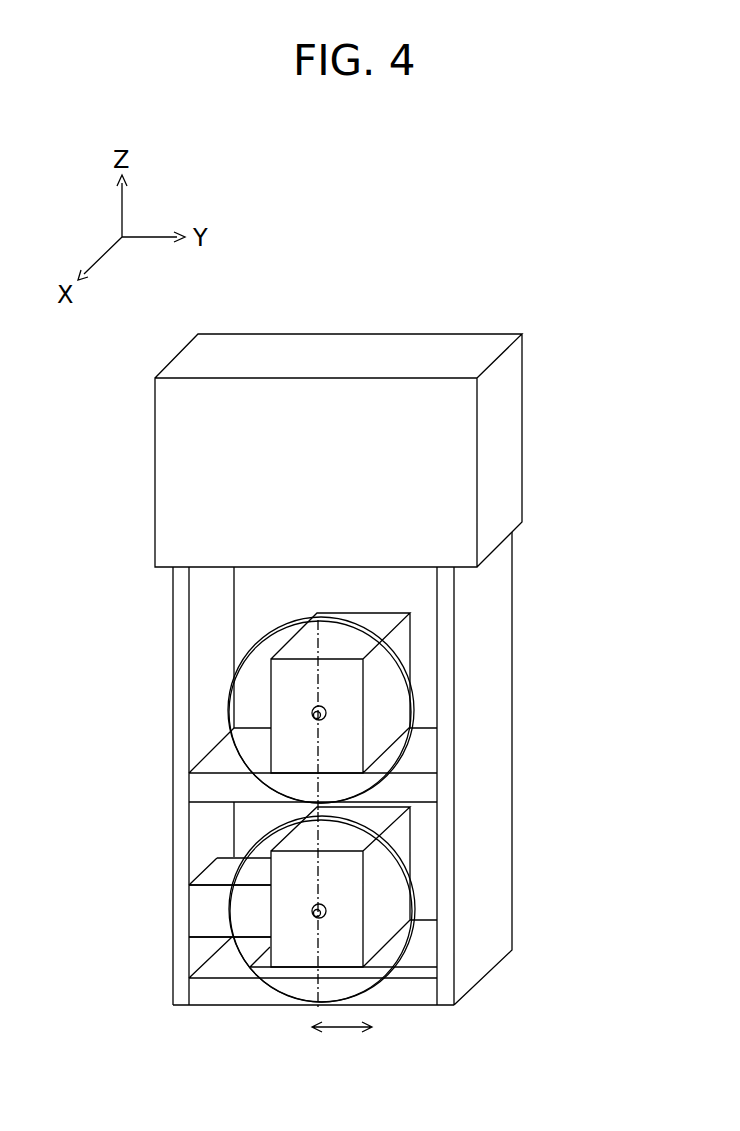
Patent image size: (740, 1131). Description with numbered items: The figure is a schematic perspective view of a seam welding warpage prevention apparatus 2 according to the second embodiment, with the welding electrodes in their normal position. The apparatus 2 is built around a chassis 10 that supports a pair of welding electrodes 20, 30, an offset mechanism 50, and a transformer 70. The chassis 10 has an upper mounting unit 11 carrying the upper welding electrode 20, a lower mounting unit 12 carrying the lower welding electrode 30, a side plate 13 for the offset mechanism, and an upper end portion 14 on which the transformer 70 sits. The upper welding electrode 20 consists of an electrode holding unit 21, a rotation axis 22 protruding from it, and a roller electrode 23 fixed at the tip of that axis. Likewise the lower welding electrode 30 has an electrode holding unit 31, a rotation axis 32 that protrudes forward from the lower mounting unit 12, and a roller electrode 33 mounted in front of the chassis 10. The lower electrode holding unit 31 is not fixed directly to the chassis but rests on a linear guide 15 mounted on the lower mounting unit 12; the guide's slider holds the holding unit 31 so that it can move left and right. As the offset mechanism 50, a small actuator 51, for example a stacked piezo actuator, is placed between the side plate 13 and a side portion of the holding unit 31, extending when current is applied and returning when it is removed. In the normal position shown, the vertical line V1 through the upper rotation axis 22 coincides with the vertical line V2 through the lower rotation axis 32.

The seam welding warpage prevention apparatus 2 is at (438, 233).
The transformer 70 is at (510, 435).
The chassis 10 is at (347, 800).
The upper mounting unit 11 is at (213, 762).
The lower mounting unit 12 is at (212, 968).
The side plate 13 is at (505, 763).
The upper end portion 14 is at (180, 583).
The linear guide 15 is at (414, 970).
The upper welding electrode 20 is at (232, 708).
The electrode holding unit 21 is at (290, 614).
The rotation axis 22 is at (315, 708).
The roller electrode 23 is at (230, 717).
The lower welding electrode 30 is at (232, 901).
The electrode holding unit 31 is at (290, 806).
The rotation axis 32 is at (315, 906).
The roller electrode 33 is at (255, 868).
The offset mechanism 50 is at (162, 911).
The actuator 51 is at (203, 908).
The vertical line V1 is at (322, 645).
The vertical line V2 is at (318, 947).